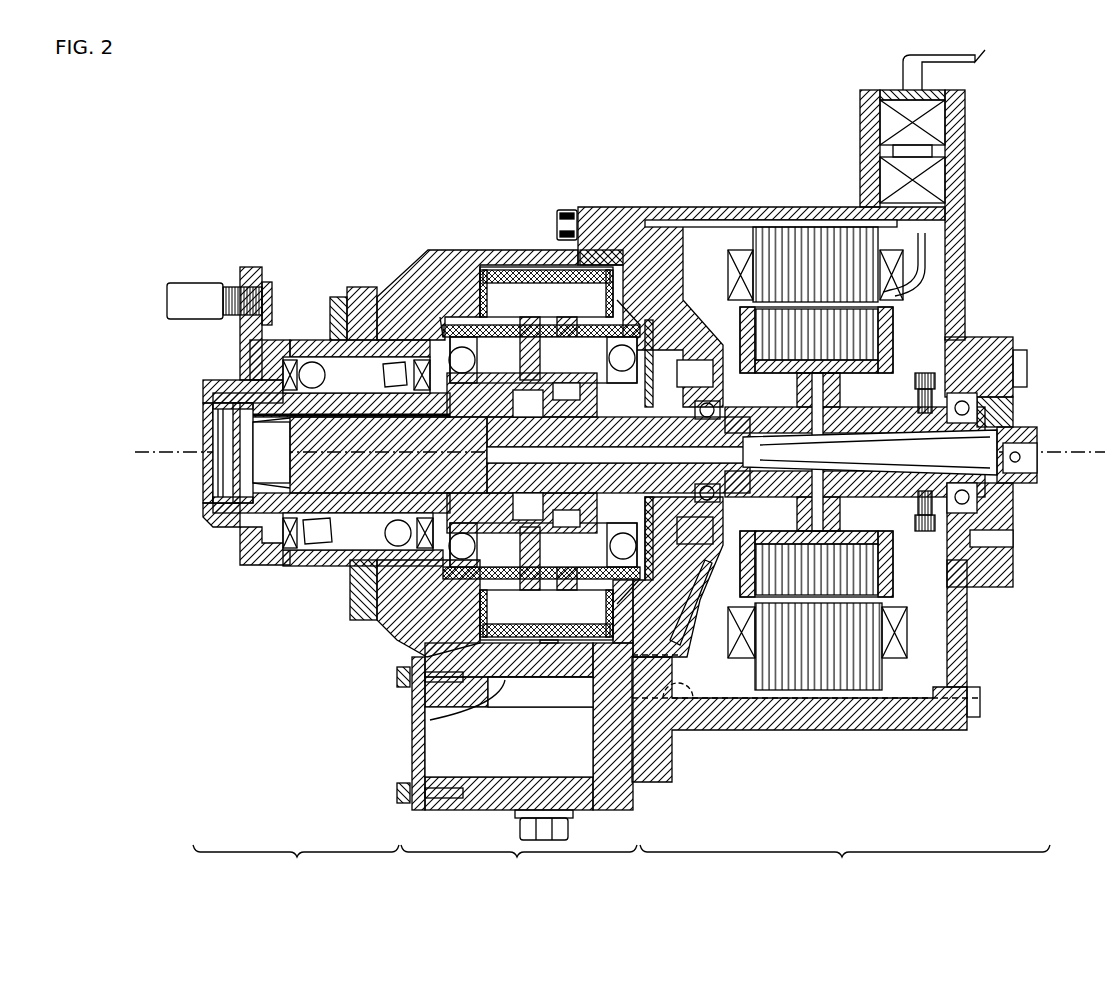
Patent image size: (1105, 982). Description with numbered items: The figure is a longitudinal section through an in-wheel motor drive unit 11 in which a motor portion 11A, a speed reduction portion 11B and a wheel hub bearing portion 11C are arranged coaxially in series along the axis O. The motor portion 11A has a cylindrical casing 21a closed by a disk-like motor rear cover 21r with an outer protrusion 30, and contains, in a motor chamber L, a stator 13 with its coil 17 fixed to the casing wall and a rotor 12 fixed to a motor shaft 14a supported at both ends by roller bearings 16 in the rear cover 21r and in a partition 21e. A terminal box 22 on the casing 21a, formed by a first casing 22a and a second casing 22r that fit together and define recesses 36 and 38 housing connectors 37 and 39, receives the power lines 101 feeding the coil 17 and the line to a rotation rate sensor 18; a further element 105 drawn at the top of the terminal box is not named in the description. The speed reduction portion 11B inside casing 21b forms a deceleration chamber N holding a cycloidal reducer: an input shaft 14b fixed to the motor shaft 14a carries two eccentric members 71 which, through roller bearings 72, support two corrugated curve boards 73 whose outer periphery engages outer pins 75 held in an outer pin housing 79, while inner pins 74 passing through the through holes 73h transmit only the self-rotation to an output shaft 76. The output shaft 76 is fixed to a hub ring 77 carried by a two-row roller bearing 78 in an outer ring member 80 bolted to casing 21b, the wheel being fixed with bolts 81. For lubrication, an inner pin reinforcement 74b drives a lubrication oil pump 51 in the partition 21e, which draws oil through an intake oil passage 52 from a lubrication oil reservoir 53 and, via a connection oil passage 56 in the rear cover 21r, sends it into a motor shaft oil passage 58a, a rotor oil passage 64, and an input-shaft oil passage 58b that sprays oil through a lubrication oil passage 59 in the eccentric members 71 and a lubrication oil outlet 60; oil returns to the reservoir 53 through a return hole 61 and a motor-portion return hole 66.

The in-wheel motor drive unit 11 is at (335, 189).
The motor portion 11A is at (845, 862).
The speed reduction portion 11B is at (519, 862).
The wheel hub bearing portion 11C is at (318, 573).
The rotor 12 is at (870, 575).
The stator 13 is at (870, 650).
The motor shaft 14a is at (985, 540).
The input shaft 14b is at (650, 340).
The roller bearings 16 is at (690, 365).
The coil 17 is at (895, 625).
The rotation rate sensor 18 is at (945, 335).
The casing 21a is at (713, 210).
The casing 21b is at (420, 268).
The partition 21e is at (757, 620).
The motor rear cover 21r is at (960, 612).
The terminal box 22 is at (975, 126).
The first casing 22a is at (865, 158).
The second casing 22r is at (965, 160).
The protrusion 30 is at (935, 730).
The recesses 36 is at (885, 118).
The connector 37 is at (890, 133).
The recesses 38 is at (885, 178).
The connector 39 is at (885, 194).
The lubrication oil pump 51 is at (657, 350).
The intake oil passage 52 is at (710, 620).
The lubrication oil reservoir 53 is at (445, 750).
The connection oil passage 56 is at (1005, 448).
The motor shaft oil passage 58a is at (1010, 462).
The speed-reduction-portion input-shaft oil passage 58b is at (240, 441).
The lubrication oil passage 59 is at (300, 477).
The lubrication oil outlet 60 is at (330, 470).
The speed-reduction-portion return hole 61 is at (480, 680).
The rotor oil passage 64 is at (985, 430).
The motor-portion return hole 66 is at (697, 733).
The eccentric members 71 is at (498, 328).
The roller bearings 72 is at (510, 300).
The curve boards 73 is at (520, 340).
The through holes 73h is at (605, 330).
The inner pins 74 is at (487, 315).
The inner pin reinforcement 74b is at (615, 600).
The outer pins 75 is at (567, 210).
The output shaft 76 is at (343, 387).
The hub ring 77 is at (250, 360).
The roller bearing 78 is at (340, 402).
The outer pin housing 79 is at (590, 260).
The outer ring member 80 is at (355, 290).
The bolts 81 is at (205, 283).
The power lines 101 is at (975, 60).
The cover plate 105 is at (865, 95).
The motor chamber L is at (910, 312).
The deceleration chamber N is at (540, 330).
The axis O is at (133, 453).